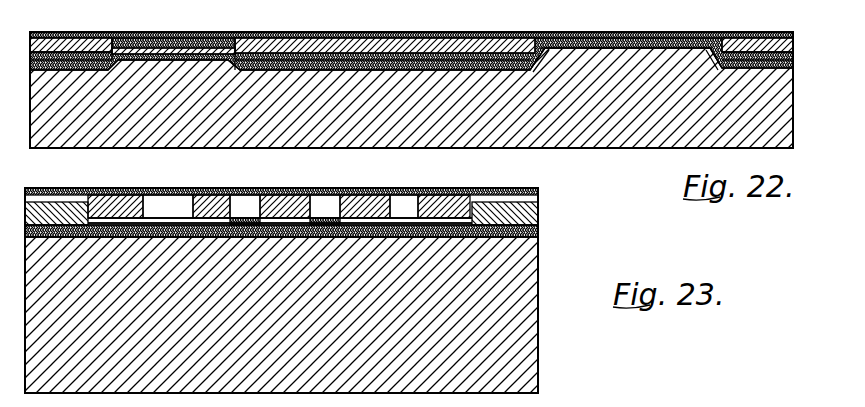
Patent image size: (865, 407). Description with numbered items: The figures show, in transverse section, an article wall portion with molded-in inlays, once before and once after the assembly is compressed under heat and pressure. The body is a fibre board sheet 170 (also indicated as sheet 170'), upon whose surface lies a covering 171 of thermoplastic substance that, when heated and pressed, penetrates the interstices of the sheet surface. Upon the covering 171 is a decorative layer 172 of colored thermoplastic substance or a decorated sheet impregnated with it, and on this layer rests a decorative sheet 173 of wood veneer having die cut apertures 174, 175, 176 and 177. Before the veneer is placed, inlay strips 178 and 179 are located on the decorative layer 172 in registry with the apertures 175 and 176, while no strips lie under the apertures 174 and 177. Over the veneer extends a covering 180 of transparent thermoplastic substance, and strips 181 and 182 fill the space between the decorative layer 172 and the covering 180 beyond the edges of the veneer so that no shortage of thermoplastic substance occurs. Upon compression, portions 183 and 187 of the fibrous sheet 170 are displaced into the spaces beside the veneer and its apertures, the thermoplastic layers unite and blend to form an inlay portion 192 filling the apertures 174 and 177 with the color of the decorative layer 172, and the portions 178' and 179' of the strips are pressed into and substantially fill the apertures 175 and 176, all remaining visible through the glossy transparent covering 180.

In FIG. 22, the sheet 170 is at (411, 112).
In FIG. 23, the sheet 170 is at (307, 315).
In FIG. 22, the substrate 170' is at (514, 30).
In FIG. 23, the covering 171 is at (82, 238).
In FIG. 23, the decorative layer 172 is at (72, 227).
In FIG. 22, the decorative sheet 173 is at (338, 43).
In FIG. 23, the decorative sheet 173 is at (131, 208).
In FIG. 23, the aperture 174 is at (152, 212).
In FIG. 23, the aperture 175 is at (256, 208).
In FIG. 23, the aperture 176 is at (333, 208).
In FIG. 23, the aperture 177 is at (415, 207).
In FIG. 23, the inlay strip 178 is at (280, 246).
In FIG. 22, the displaced portion of strip 178' is at (173, 27).
In FIG. 23, the displaced portion of strip 178' is at (280, 315).
In FIG. 23, the inlay strip 179 is at (281, 252).
In FIG. 23, the displaced portion of strip 179' is at (281, 316).
In FIG. 23, the covering 180 is at (561, 184).
In FIG. 23, the strip 181 is at (54, 214).
In FIG. 23, the strip 182 is at (538, 215).
In FIG. 22, the displaced portion of fibrous sheet 183 is at (160, 62).
In FIG. 22, the displaced portion of fibrous sheet 187 is at (619, 52).
In FIG. 22, the inlay portion 192 is at (685, 44).